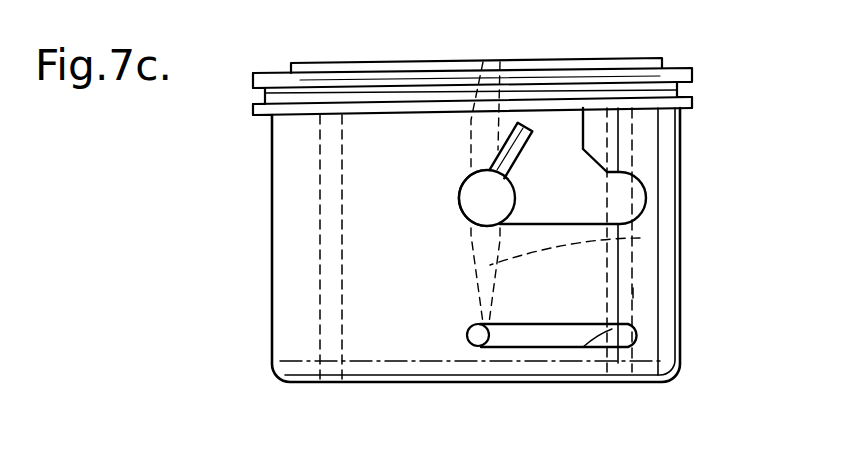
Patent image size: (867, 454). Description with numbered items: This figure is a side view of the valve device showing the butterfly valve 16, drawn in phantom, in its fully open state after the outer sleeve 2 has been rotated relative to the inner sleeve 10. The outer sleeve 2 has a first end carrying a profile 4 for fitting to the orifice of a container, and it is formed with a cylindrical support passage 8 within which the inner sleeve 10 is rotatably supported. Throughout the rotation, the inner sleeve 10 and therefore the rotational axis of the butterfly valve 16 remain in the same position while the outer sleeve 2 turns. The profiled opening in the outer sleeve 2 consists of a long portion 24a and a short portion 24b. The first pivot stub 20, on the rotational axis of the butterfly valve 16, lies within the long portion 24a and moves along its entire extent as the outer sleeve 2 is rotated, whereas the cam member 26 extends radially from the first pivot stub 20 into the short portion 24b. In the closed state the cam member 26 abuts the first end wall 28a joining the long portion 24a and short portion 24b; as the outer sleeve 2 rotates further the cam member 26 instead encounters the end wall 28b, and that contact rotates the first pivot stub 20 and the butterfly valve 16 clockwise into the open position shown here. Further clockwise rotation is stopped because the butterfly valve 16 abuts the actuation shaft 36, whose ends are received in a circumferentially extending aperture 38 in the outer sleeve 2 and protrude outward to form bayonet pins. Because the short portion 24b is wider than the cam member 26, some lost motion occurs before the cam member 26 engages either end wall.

The outer sleeve 2 is at (283, 242).
The profile 4 is at (682, 88).
The cylindrical support passage 8 is at (633, 288).
The inner sleeve 10 is at (325, 290).
The butterfly valve 16 is at (640, 238).
The first pivot stub 20 is at (497, 207).
The long portion 24a is at (533, 222).
The short portion 24b is at (568, 122).
The cam member 26 is at (545, 153).
The first end wall 28a is at (600, 152).
The end wall 28b is at (497, 152).
The actuation shaft 36 is at (466, 336).
The circumferentially extending aperture 38 is at (640, 329).